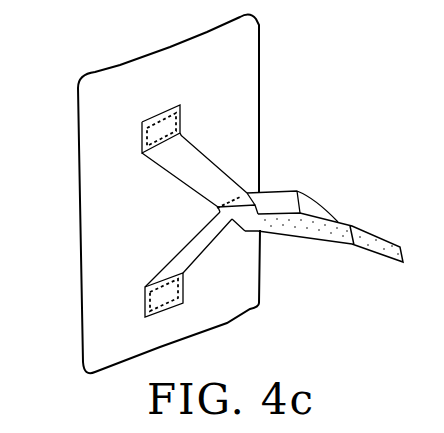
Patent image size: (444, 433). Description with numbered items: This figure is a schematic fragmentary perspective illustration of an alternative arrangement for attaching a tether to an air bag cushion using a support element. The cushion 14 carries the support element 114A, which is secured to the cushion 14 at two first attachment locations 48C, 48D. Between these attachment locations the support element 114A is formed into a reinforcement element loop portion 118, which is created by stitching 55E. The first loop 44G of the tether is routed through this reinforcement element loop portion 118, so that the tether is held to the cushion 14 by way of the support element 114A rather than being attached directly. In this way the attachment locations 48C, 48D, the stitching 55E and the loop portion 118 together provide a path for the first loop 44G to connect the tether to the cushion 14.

The cushion 14 is at (222, 66).
The first attachment location 48C is at (142, 125).
The support element 114A is at (197, 165).
The first attachment location 48D is at (143, 297).
The stitching 55E is at (244, 196).
The reinforcement element loop portion 118 is at (278, 200).
The first loop 44G is at (308, 222).